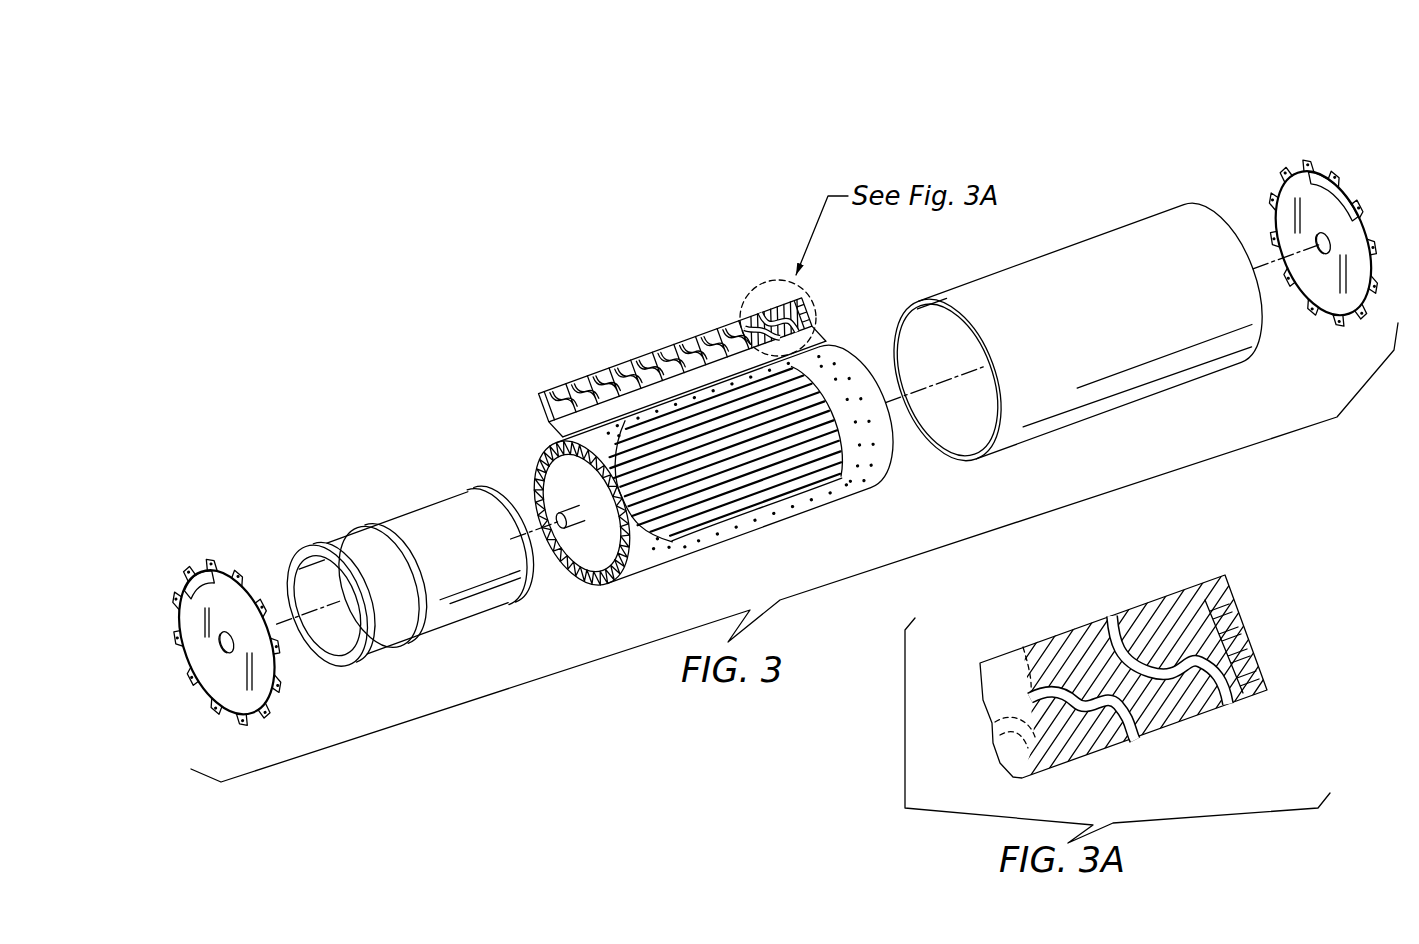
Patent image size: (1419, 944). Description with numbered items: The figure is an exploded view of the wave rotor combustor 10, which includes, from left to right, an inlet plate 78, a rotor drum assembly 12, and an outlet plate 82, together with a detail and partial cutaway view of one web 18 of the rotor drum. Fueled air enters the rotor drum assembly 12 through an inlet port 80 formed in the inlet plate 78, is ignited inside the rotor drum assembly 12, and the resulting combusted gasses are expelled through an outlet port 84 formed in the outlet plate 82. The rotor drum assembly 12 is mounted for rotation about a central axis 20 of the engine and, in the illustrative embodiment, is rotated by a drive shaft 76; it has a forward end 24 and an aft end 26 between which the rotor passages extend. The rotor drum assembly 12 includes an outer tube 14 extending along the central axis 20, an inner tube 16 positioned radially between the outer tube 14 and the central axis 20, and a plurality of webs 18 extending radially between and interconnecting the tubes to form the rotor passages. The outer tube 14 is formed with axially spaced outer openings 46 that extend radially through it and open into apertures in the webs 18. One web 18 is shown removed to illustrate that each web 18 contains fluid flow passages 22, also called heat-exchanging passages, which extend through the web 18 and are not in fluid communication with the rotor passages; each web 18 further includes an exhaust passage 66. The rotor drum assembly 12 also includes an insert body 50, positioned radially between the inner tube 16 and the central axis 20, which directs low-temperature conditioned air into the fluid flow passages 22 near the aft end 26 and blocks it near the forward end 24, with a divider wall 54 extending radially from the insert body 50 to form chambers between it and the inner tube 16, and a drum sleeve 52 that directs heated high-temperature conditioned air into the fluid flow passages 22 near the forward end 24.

In FIG. 3, the wave rotor combustor 10 is at (910, 107).
In FIG. 3, the rotor drum assembly 12 is at (745, 220).
In FIG. 3, the outer tube 14 is at (665, 557).
In FIG. 3, the inner tube 16 is at (610, 548).
In FIG. 3, the web 18 is at (623, 350).
In FIG. 3A, the web 18 is at (1200, 580).
In FIG. 3, the central axis 20 is at (283, 622).
In FIG. 3, the fluid flow passages 22 is at (745, 342).
In FIG. 3A, the fluid flow passages 22 is at (1112, 612).
In FIG. 3, the forward end 24 is at (180, 580).
In FIG. 3, the aft end 26 is at (1380, 162).
In FIG. 3, the outer openings 46 is at (870, 487).
In FIG. 3, the insert body 50 is at (437, 497).
In FIG. 3, the drum sleeve 52 is at (1062, 243).
In FIG. 3, the divider wall 54 is at (440, 632).
In FIG. 3A, the exhaust passage 66 is at (1247, 692).
In FIG. 3, the drive shaft 76 is at (583, 497).
In FIG. 3, the inlet plate 78 is at (204, 555).
In FIG. 3, the inlet port 80 is at (185, 604).
In FIG. 3, the outlet plate 82 is at (1296, 152).
In FIG. 3, the outlet port 84 is at (1320, 197).